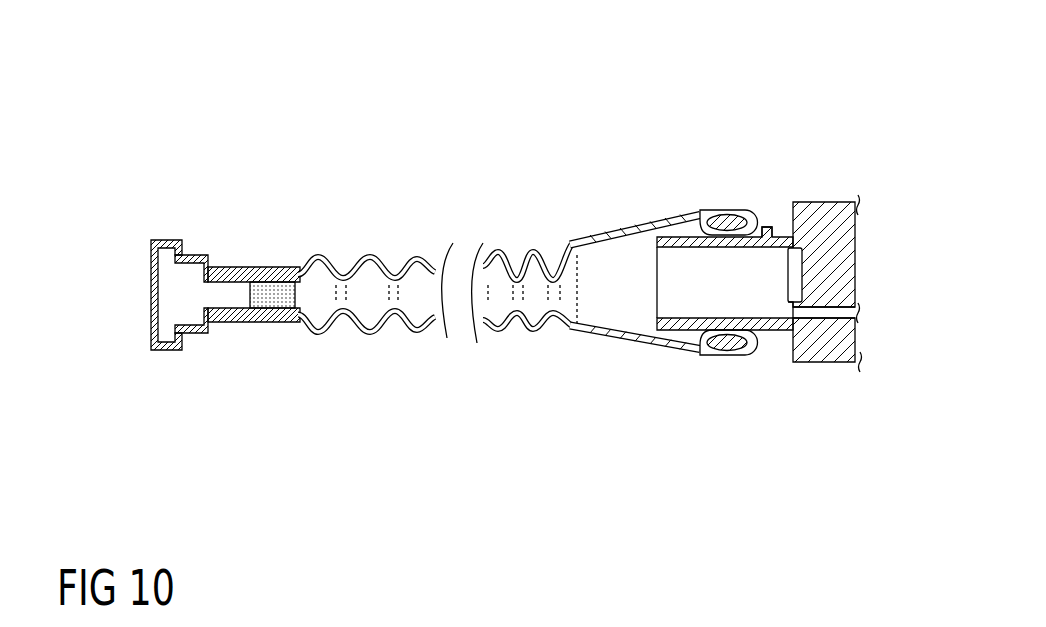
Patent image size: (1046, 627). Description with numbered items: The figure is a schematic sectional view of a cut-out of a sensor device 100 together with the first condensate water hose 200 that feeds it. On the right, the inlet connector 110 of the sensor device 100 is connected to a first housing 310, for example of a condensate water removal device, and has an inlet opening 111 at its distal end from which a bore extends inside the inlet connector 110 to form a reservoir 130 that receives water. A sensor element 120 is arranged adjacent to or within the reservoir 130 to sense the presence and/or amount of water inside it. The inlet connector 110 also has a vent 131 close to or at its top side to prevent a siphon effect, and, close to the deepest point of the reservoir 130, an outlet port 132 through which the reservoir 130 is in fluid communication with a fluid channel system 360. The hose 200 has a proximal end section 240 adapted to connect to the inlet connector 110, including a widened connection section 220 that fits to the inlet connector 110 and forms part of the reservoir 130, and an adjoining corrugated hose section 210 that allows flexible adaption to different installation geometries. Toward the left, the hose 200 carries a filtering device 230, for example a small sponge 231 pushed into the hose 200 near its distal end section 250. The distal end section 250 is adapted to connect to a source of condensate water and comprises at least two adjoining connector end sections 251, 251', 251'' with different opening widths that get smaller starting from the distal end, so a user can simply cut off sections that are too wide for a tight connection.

The sensor device 100 is at (735, 226).
The inlet connector 110 is at (661, 262).
The inlet opening 111 is at (654, 288).
The sensor element 120 is at (786, 277).
The reservoir 130 is at (675, 262).
The vent 131 is at (770, 224).
The outlet port 132 is at (786, 312).
The first condensate water hose 200 is at (615, 236).
The corrugated hose section 210 is at (515, 236).
The widened connection section 220 is at (613, 343).
The filtering device 230 is at (271, 261).
The sponge 231 is at (278, 299).
The proximal end section 240 is at (664, 155).
The distal end section 250 is at (244, 286).
The connector end section 251 is at (254, 324).
The connector end section 251' is at (218, 331).
The connector end section 251'' is at (163, 337).
The first housing 310 is at (851, 199).
The fluid channel system 360 is at (854, 311).